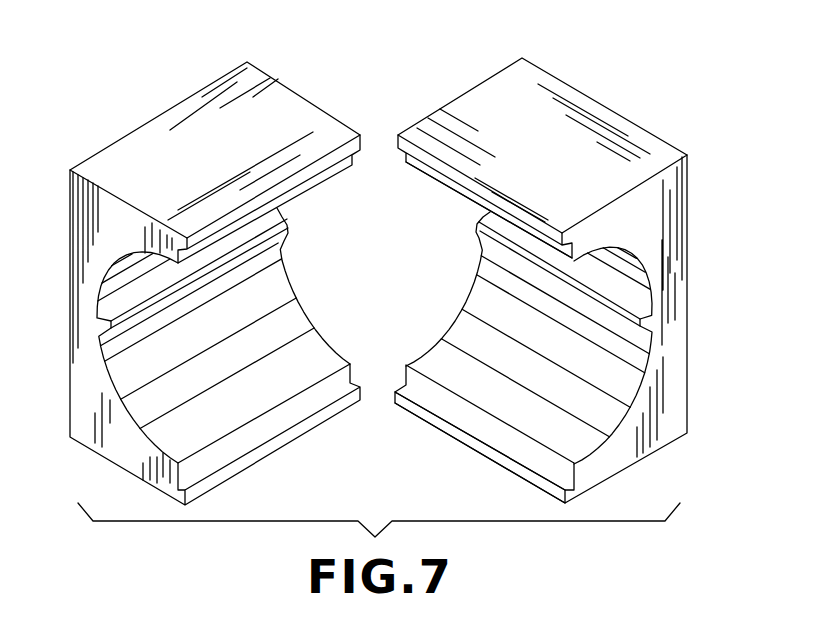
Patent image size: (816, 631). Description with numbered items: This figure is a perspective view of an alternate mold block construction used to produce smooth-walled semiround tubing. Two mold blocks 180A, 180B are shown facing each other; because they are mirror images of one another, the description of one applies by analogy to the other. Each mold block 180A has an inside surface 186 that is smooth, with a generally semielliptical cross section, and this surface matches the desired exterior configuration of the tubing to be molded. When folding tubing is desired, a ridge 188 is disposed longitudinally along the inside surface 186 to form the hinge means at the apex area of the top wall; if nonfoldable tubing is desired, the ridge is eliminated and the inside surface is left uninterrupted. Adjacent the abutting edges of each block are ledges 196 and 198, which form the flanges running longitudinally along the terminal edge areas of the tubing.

The mold block 180B is at (270, 64).
The mold block 180A is at (582, 78).
The ledge 196 is at (570, 247).
The ledge 198 is at (533, 447).
The inside surface 186 is at (458, 284).
The ridge 188 is at (615, 305).